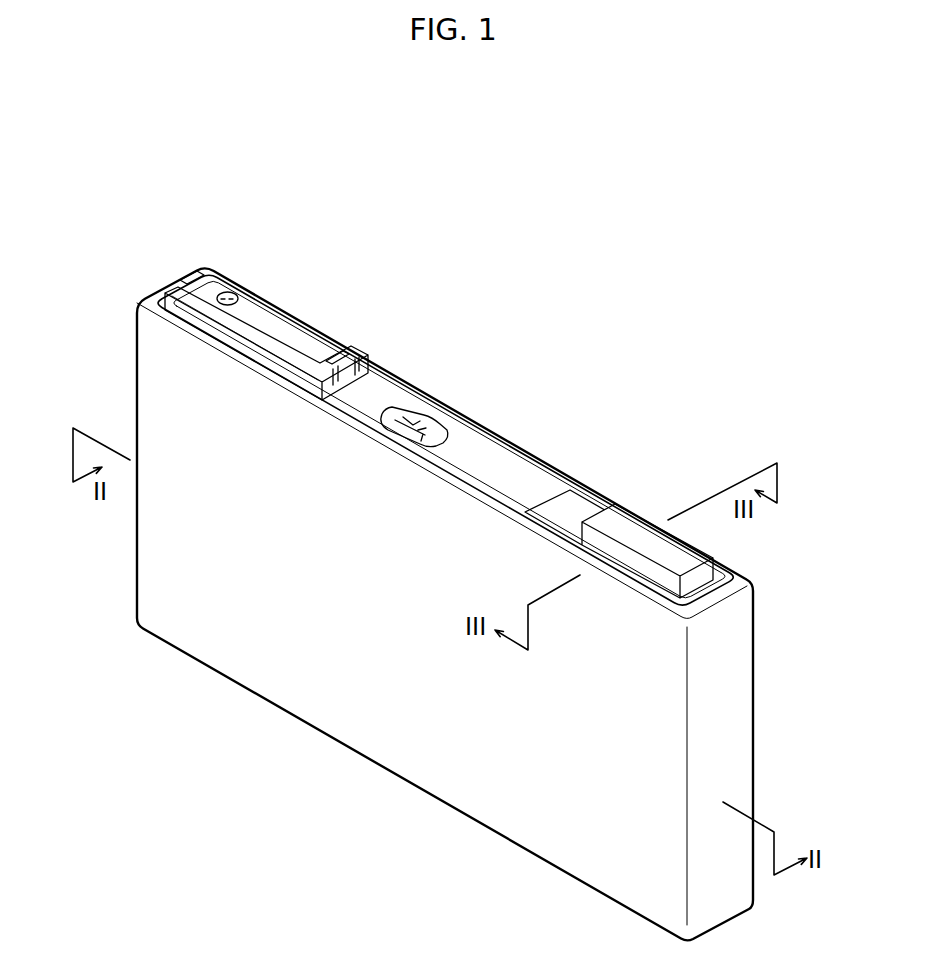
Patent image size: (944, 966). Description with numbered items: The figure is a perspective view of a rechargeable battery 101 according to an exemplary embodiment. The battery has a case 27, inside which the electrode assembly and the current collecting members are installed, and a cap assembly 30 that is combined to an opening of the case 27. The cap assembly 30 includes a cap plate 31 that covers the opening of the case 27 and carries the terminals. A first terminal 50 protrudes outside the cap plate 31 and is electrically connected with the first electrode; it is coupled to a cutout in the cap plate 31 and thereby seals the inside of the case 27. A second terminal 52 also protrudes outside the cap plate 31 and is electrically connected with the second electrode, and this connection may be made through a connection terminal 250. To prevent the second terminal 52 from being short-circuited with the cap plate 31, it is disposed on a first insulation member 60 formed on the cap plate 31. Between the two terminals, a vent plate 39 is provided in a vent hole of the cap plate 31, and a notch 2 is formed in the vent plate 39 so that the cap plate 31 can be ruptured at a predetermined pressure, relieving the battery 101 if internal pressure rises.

The rechargeable battery 101 is at (479, 192).
The case 27 is at (380, 735).
The cap assembly 30 is at (487, 432).
The cap plate 31 is at (382, 386).
The second terminal 52 is at (261, 309).
The first insulation member 60 is at (331, 332).
The connection terminal 250 is at (228, 291).
The vent plate 39 is at (401, 408).
The notch 2 is at (420, 423).
The first terminal 50 is at (632, 527).